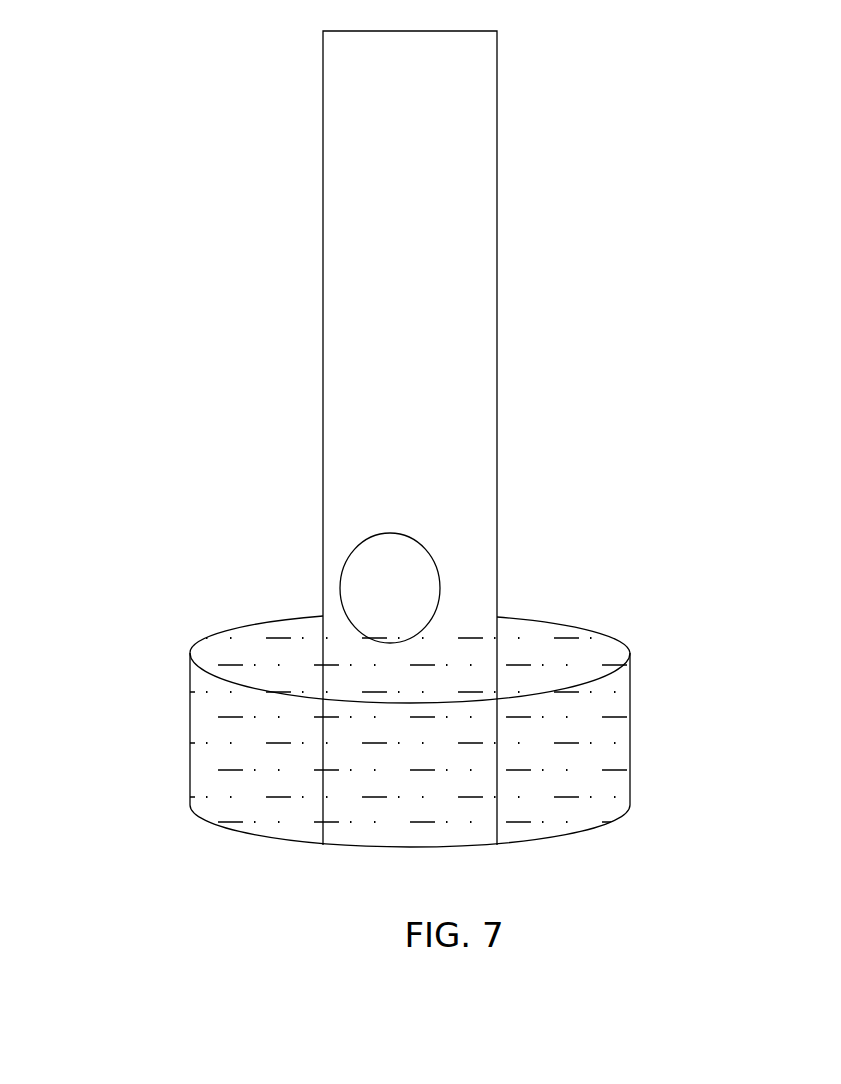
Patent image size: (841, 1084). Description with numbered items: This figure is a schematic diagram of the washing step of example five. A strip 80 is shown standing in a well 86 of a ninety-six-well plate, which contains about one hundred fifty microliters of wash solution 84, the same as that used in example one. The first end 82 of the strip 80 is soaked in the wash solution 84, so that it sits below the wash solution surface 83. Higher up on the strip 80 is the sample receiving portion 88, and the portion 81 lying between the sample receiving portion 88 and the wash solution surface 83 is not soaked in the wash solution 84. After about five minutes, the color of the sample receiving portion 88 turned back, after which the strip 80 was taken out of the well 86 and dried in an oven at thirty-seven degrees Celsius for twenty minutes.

The strip 80 is at (258, 172).
The portion between the sample receiving portion and the wash solution surface 81 is at (355, 650).
The first end 82 is at (388, 825).
The wash solution surface 83 is at (233, 652).
The wash solution 84 is at (482, 684).
The well 86 is at (628, 727).
The sample receiving portion 88 is at (365, 563).